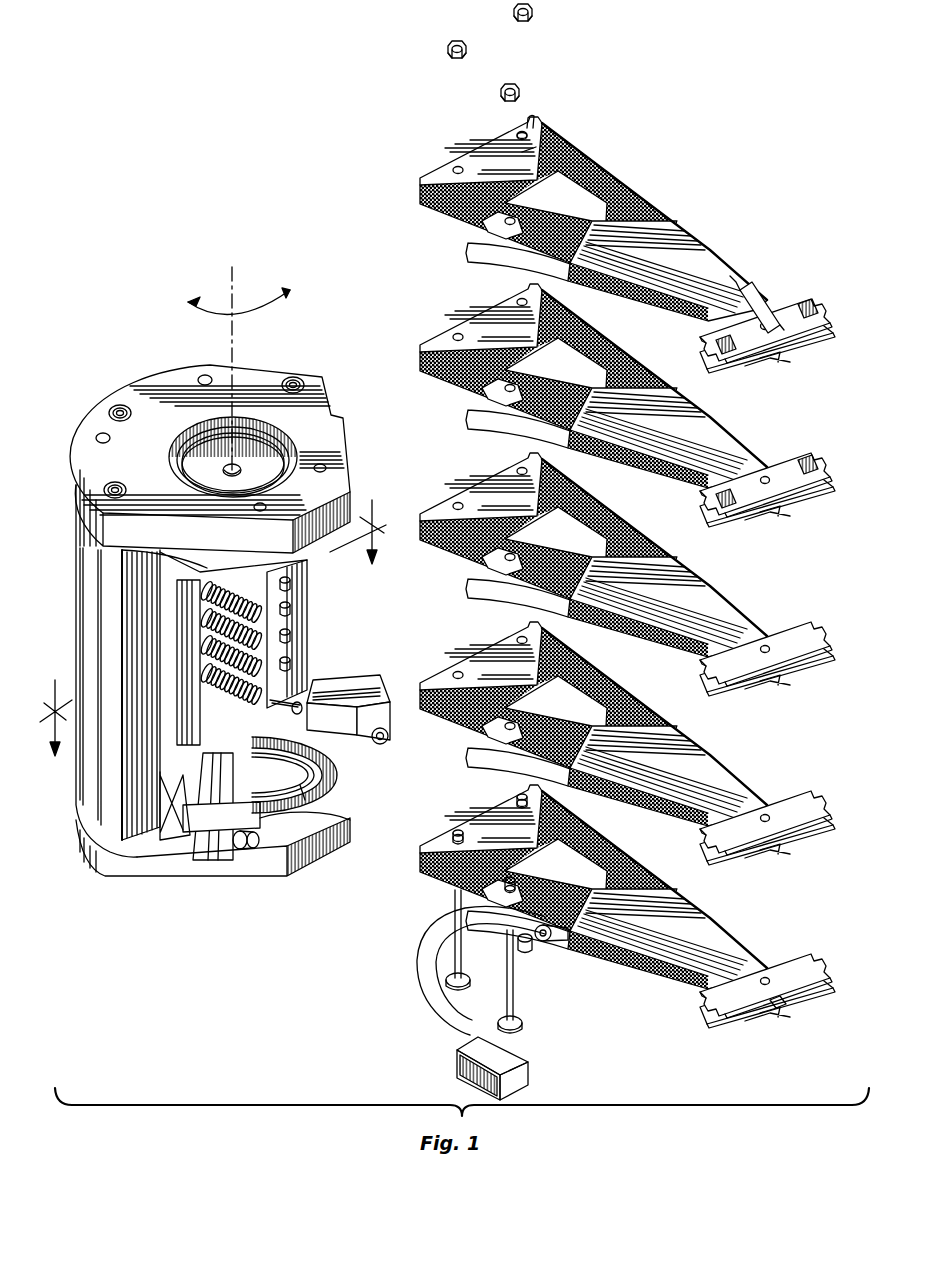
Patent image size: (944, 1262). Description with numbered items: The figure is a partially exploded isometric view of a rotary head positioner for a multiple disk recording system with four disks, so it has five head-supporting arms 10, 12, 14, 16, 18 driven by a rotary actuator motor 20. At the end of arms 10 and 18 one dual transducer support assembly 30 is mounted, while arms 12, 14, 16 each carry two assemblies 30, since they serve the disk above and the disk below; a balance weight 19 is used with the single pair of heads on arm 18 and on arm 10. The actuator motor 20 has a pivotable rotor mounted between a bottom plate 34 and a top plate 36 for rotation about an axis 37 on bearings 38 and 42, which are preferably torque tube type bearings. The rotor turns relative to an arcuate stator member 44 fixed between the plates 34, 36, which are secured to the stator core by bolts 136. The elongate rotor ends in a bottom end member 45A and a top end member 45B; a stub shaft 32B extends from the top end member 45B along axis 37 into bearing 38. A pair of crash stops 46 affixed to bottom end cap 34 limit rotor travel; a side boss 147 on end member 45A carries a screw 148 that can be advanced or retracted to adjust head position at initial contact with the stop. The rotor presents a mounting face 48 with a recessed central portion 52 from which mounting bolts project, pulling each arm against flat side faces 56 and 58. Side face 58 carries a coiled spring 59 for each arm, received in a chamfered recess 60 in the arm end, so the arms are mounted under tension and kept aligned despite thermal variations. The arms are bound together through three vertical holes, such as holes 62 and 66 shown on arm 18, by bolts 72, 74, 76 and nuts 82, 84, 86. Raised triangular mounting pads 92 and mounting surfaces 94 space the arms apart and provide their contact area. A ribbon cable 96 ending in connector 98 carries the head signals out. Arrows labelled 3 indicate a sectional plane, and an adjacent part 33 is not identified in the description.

The section line 3 is at (213, 617).
The head-supporting arm 10 is at (675, 944).
The head-supporting arm 12 is at (671, 782).
The head-supporting arm 14 is at (675, 612).
The head-supporting arm 16 is at (673, 441).
The head-supporting arm 18 is at (680, 280).
The balance weight 19 is at (770, 296).
The rotary actuator motor 20 is at (224, 594).
The dual transducer support assembly 30 is at (790, 350).
The stub shaft 32B is at (212, 465).
The bearing 33 is at (305, 772).
The bottom plate 34 is at (267, 862).
The top plate 36 is at (240, 372).
The axis 37 is at (236, 278).
The bearing 38 is at (300, 460).
The bearing 42 is at (280, 797).
The arcuate stator member 44 is at (118, 858).
The bottom end member 45A is at (300, 783).
The top end member 45B is at (216, 576).
The crash stop 46 is at (360, 678).
The mounting face 48 is at (298, 610).
The recessed central portion 52 is at (237, 698).
The flat side face 56 is at (183, 708).
The flat side face 58 is at (290, 646).
The coiled spring 59 is at (294, 637).
The recess 60 is at (527, 118).
The vertical hole 62 is at (483, 227).
The vertical hole 66 is at (527, 134).
The bolt 72 is at (523, 1027).
The bolt 74 is at (460, 990).
The bolt 76 is at (530, 955).
The nut 82 is at (515, 86).
The nut 84 is at (455, 42).
The nut 86 is at (534, 12).
The mounting pad 92 is at (478, 242).
The mounting surface 94 is at (535, 147).
The ribbon cable 96 is at (428, 1022).
The connector 98 is at (456, 1056).
The bolt 136 is at (297, 377).
The side boss 147 is at (180, 768).
The screw 148 is at (275, 702).